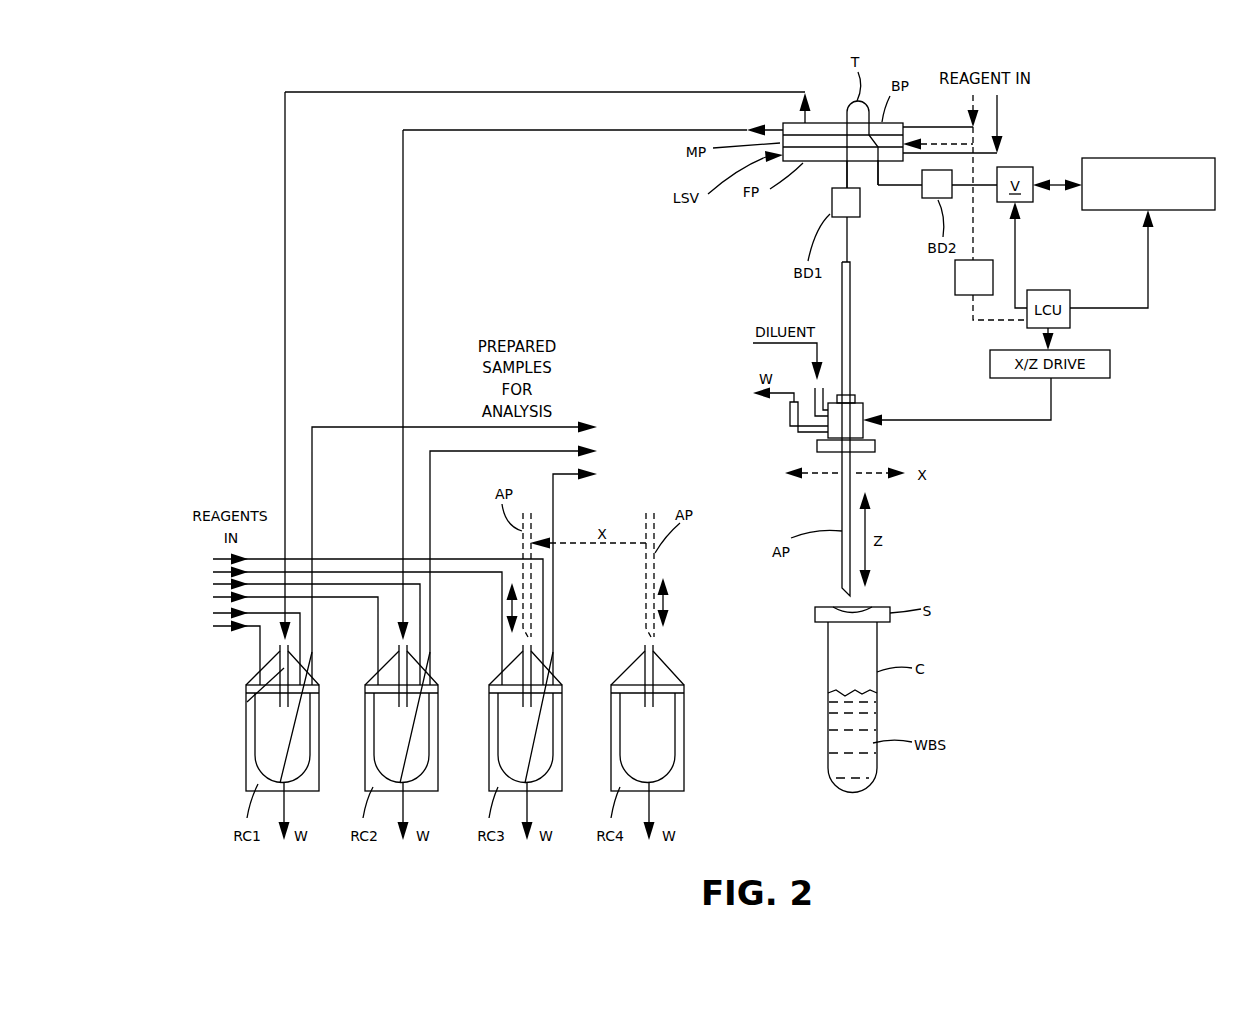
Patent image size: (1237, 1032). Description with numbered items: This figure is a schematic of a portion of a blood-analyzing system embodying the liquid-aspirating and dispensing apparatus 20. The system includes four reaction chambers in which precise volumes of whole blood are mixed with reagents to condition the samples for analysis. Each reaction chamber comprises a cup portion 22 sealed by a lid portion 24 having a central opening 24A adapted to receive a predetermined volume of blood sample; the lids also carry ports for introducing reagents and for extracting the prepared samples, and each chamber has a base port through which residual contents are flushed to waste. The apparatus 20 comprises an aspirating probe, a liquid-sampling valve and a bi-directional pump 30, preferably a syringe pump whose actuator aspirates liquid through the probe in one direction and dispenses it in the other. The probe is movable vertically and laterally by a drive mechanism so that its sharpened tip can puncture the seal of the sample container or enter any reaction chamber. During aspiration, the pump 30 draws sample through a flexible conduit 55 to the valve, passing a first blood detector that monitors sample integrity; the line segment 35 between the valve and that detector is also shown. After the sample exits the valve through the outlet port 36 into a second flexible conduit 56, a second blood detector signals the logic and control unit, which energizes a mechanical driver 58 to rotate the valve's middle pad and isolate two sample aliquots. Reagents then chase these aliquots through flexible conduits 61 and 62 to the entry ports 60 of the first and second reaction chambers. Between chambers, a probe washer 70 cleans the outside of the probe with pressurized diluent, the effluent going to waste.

The liquid-aspirating and dispensing apparatus 20 is at (968, 432).
The cup portion 22 is at (245, 740).
The lid portion 24 is at (257, 677).
The central opening 24A is at (246, 703).
The bi-directional pump 30 is at (1147, 157).
The fluid line to bubble detector 35 is at (843, 168).
The outlet port 36 is at (880, 175).
The flexible conduit 55 is at (852, 254).
The second flexible conduit 56 is at (900, 187).
The mechanical driver 58 is at (966, 289).
The entry ports 60 is at (291, 652).
The flexible conduit 61 is at (563, 92).
The flexible conduit 62 is at (563, 132).
The probe washer 70 is at (873, 390).